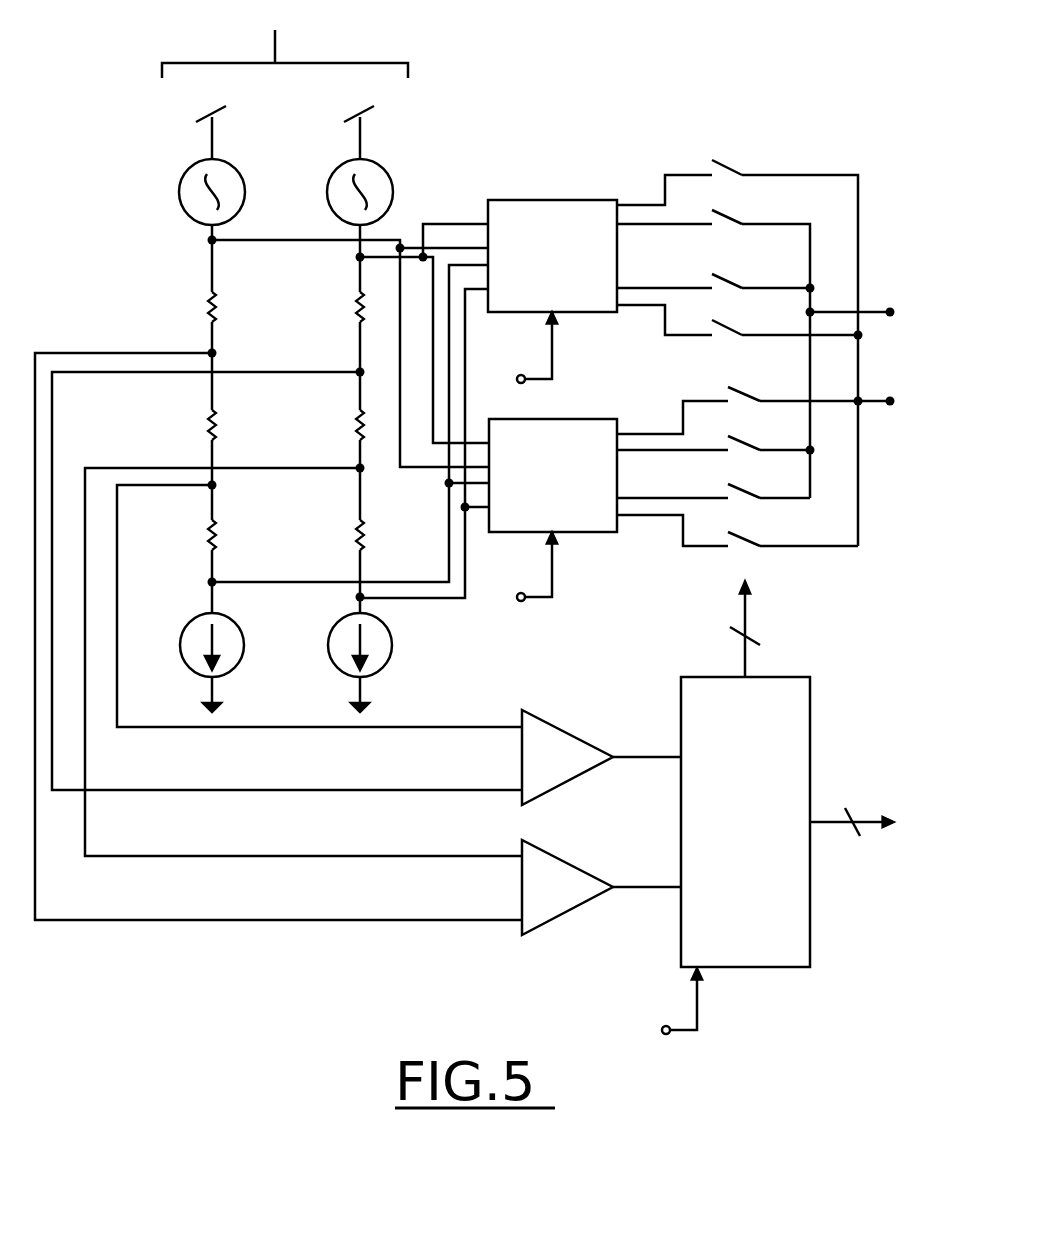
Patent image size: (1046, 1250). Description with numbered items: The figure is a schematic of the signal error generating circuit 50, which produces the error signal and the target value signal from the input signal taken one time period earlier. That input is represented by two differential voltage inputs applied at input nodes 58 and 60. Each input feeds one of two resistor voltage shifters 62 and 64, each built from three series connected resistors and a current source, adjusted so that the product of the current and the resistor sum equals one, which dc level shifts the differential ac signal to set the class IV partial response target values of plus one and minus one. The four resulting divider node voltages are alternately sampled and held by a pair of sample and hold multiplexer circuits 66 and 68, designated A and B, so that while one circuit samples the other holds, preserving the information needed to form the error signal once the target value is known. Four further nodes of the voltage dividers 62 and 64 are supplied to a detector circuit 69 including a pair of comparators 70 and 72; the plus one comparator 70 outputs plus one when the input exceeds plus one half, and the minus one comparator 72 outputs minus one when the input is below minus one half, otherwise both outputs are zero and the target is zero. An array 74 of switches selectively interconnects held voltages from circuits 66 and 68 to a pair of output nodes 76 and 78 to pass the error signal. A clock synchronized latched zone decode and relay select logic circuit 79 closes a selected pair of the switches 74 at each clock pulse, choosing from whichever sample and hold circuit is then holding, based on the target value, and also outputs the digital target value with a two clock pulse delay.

The signal error generating circuit 50 is at (568, 99).
The input node 58 is at (208, 246).
The input node 60 is at (357, 262).
The resistor voltage shifter 62 is at (128, 327).
The resistor voltage shifter 64 is at (415, 201).
The sample and hold circuit A 66 is at (552, 303).
The sample and hold circuit B 68 is at (553, 521).
The detector circuit 69 is at (612, 643).
The +1 comparator 70 is at (601, 757).
The −1 comparator 72 is at (601, 887).
The array of switches 74 is at (730, 100).
The output node 76 is at (893, 317).
The output node 78 is at (893, 406).
The latched zone decode and relay select logic circuit 79 is at (777, 820).